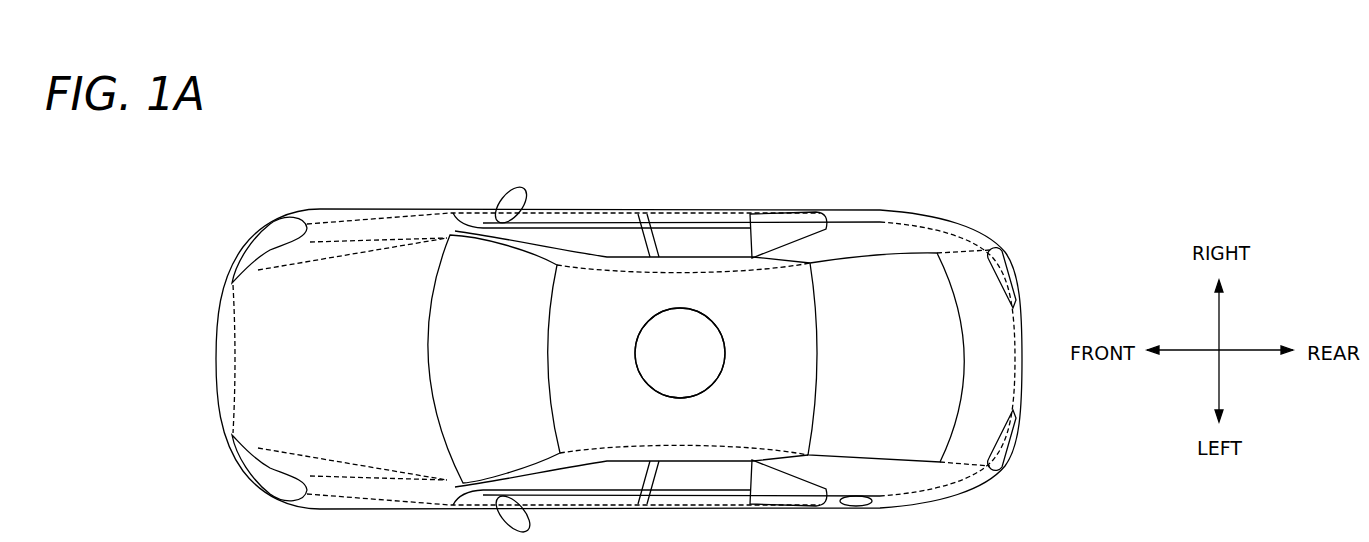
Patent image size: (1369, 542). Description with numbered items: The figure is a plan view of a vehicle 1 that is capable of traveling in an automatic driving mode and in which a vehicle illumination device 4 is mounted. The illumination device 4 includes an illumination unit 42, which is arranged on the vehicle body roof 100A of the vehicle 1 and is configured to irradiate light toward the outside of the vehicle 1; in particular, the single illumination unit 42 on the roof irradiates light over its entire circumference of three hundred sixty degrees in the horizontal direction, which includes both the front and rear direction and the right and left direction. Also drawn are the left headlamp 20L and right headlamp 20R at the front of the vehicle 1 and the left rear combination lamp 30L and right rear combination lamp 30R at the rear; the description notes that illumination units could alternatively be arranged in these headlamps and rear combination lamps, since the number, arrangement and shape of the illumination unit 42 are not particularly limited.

The vehicle 1 is at (216, 224).
The right headlamp 20R is at (263, 231).
The left headlamp 20L is at (250, 480).
The right rear combination lamp 30R is at (1007, 255).
The left rear combination lamp 30L is at (1010, 475).
The vehicle body roof 100A is at (772, 282).
The vehicle illumination device 4 is at (716, 309).
The illumination unit 42 is at (704, 392).